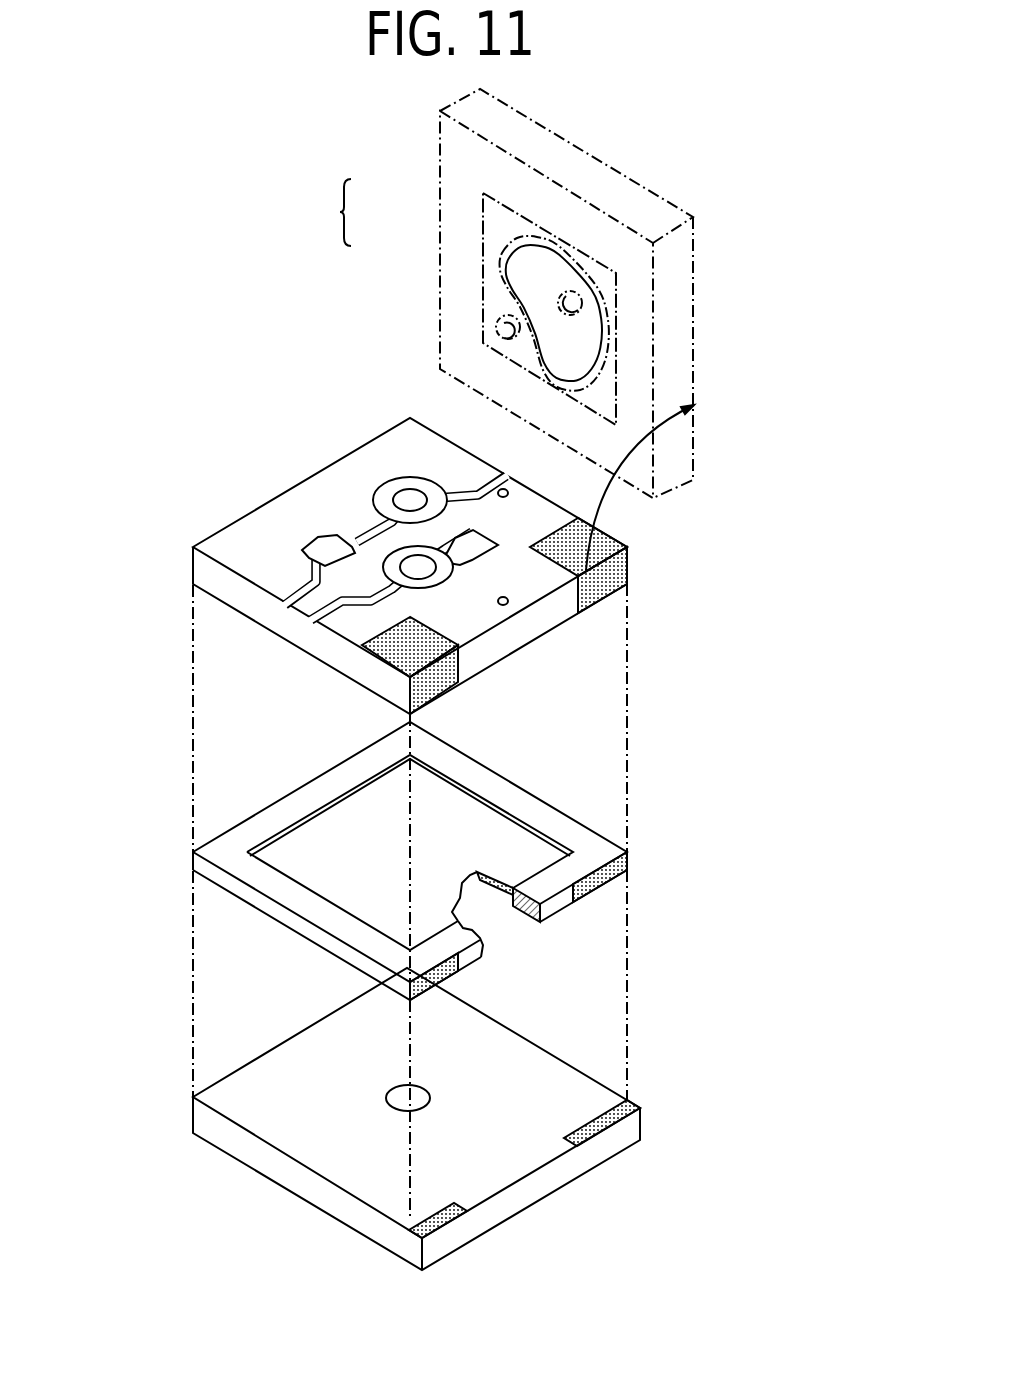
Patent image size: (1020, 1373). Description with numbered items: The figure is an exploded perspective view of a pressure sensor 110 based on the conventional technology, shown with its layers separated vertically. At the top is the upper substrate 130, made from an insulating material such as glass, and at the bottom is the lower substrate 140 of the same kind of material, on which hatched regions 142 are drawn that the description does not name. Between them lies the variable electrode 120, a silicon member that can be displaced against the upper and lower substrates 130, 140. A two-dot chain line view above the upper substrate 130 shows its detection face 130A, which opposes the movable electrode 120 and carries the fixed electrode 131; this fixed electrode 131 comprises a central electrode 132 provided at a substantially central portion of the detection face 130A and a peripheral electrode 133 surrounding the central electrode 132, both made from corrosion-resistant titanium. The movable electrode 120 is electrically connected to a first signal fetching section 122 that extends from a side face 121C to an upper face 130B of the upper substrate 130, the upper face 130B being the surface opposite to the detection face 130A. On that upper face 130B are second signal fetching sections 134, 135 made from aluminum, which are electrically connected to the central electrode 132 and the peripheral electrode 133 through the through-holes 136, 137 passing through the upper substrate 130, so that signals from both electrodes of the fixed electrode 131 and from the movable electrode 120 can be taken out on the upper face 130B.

The pressure sensor 110 is at (675, 165).
The variable electrode 120 is at (305, 866).
The side face 121C is at (563, 903).
The first signal fetching section 122 is at (618, 573).
The upper substrate 130 is at (437, 128).
The detection face 130A is at (457, 275).
The upper face 130B is at (500, 614).
The fixed electrode 131 is at (327, 212).
The central electrode 132 is at (517, 265).
The peripheral electrode 133 is at (498, 219).
The second signal fetching section 134 is at (452, 566).
The second signal fetching section 135 is at (380, 497).
The through-hole 136 is at (582, 306).
The through-hole 137 is at (498, 330).
The lower substrate 140 is at (205, 1122).
The terminal pads 142 is at (525, 1167).